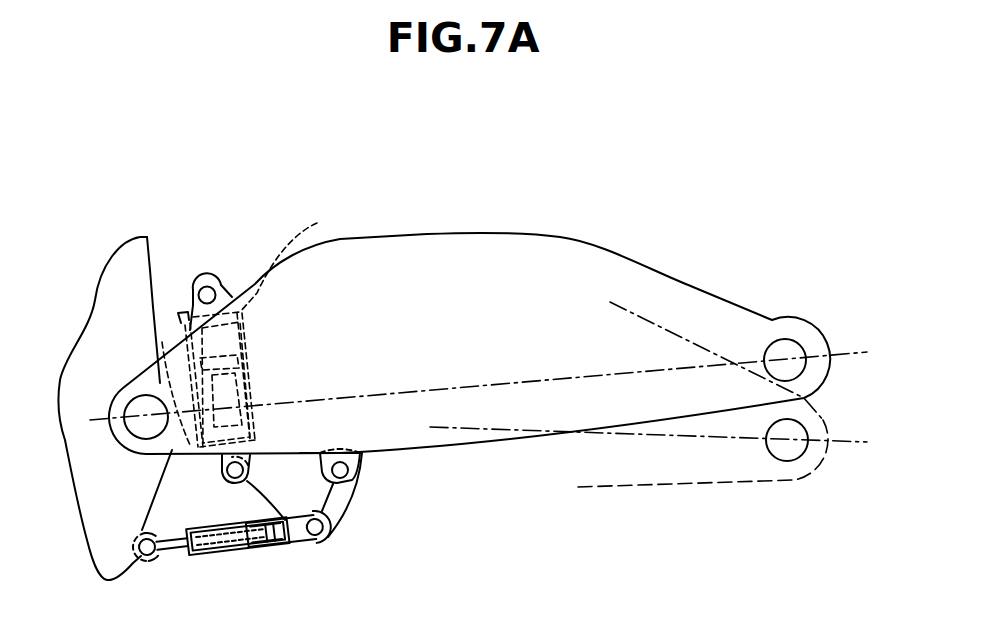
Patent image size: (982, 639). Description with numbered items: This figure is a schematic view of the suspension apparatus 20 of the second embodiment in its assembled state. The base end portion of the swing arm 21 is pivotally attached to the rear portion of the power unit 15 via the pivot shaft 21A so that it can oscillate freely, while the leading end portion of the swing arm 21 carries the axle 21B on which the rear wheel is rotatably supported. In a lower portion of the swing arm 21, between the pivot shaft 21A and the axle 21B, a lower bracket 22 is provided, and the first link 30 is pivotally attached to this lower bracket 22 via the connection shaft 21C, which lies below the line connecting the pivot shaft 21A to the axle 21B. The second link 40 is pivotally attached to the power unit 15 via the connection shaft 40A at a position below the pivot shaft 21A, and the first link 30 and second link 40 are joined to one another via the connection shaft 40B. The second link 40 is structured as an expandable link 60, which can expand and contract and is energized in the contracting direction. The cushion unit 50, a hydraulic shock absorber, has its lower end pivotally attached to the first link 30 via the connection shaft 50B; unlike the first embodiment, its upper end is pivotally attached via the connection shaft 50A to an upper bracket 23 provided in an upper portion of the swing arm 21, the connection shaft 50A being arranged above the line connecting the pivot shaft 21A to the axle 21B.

The power unit 15 is at (130, 257).
The suspension apparatus 20 is at (286, 189).
The swing arm 21 is at (457, 257).
The pivot shaft 21A is at (142, 410).
The axle 21B is at (783, 352).
The connection shaft 21C is at (355, 478).
The lower bracket 22 is at (363, 455).
The upper bracket 23 is at (228, 285).
The first link 30 is at (333, 497).
The second link 40 is at (230, 553).
The connection shaft 40A is at (147, 557).
The connection shaft 40B is at (322, 532).
The cushion unit 50 is at (312, 226).
The connection shaft 50A is at (203, 288).
The connection shaft 50B is at (227, 485).
The expandable link 60 is at (280, 545).